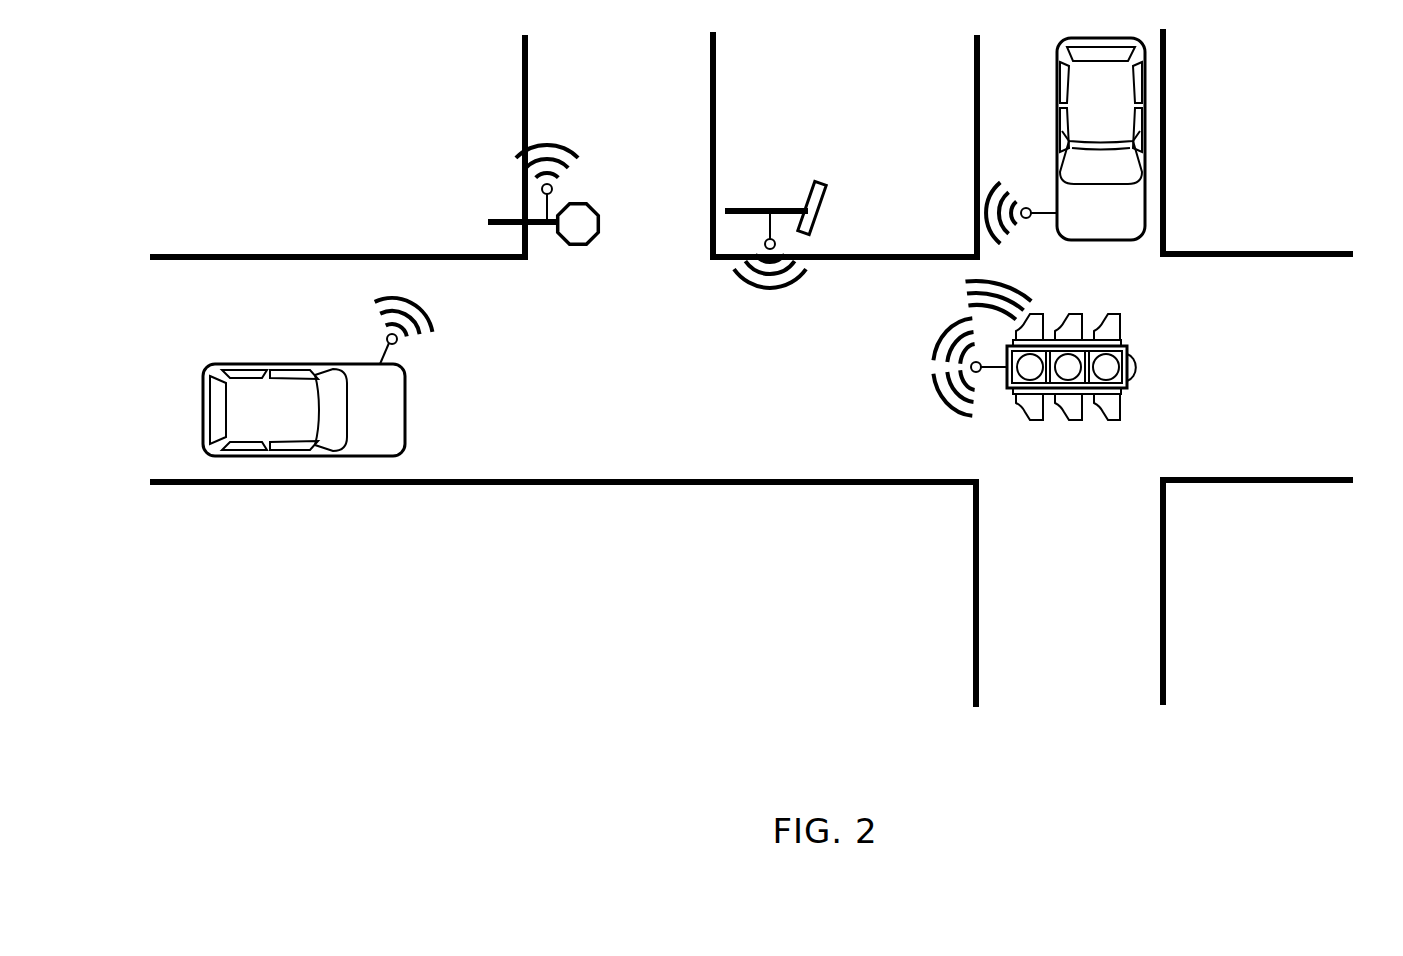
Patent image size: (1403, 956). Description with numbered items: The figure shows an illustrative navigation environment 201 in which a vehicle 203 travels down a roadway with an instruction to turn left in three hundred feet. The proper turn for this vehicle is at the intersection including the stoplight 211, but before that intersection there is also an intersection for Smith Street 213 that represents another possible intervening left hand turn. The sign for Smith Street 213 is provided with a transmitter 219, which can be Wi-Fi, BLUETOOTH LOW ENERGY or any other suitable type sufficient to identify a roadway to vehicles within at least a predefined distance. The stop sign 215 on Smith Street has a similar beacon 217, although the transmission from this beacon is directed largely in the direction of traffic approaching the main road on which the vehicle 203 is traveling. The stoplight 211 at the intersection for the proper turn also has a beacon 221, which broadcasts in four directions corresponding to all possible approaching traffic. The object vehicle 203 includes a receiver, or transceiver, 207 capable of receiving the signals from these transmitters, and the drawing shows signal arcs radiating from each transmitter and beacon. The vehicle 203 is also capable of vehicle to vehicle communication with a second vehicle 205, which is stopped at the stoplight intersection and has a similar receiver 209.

The navigation environment 201 is at (626, 492).
The vehicle 203 is at (365, 456).
The vehicle 205 is at (1146, 140).
The receiver 207 is at (403, 356).
The receiver 209 is at (1027, 190).
The stoplight 211 is at (1091, 405).
The Smith Street 213 is at (812, 178).
The stop sign 215 is at (578, 246).
The beacon 217 is at (556, 190).
The transmitter 219 is at (777, 292).
The beacon 221 is at (991, 386).